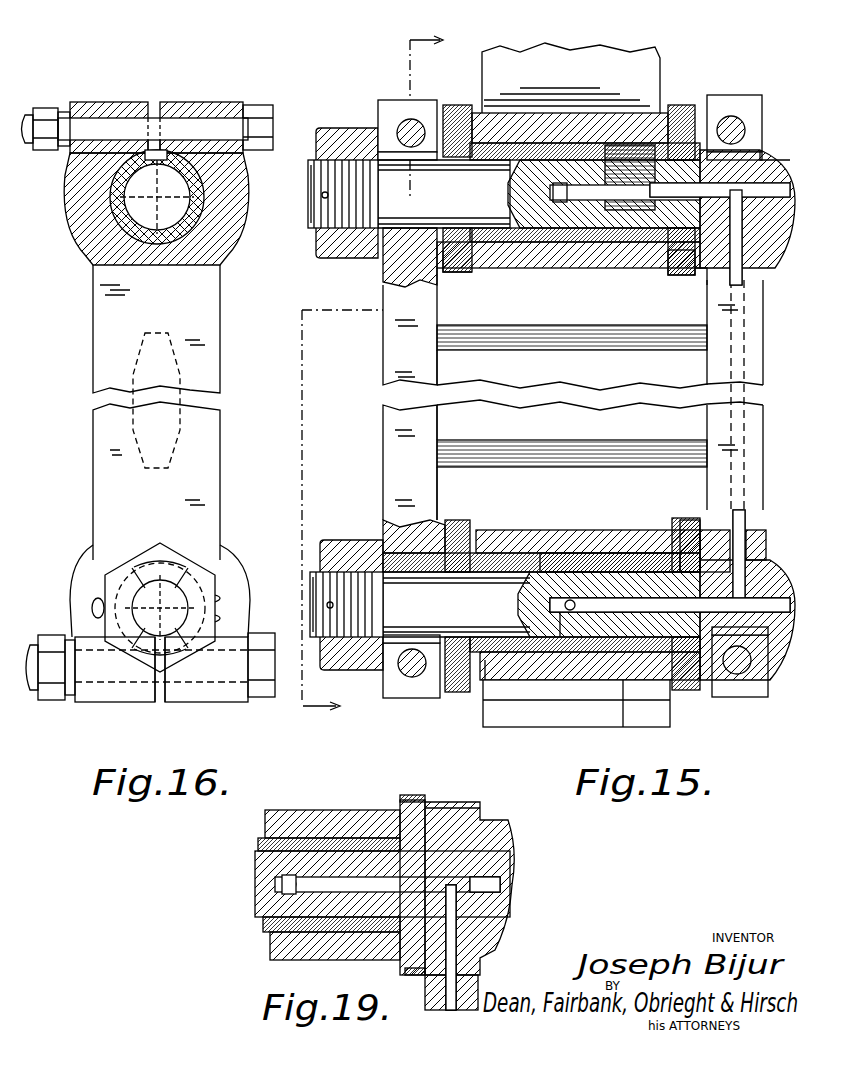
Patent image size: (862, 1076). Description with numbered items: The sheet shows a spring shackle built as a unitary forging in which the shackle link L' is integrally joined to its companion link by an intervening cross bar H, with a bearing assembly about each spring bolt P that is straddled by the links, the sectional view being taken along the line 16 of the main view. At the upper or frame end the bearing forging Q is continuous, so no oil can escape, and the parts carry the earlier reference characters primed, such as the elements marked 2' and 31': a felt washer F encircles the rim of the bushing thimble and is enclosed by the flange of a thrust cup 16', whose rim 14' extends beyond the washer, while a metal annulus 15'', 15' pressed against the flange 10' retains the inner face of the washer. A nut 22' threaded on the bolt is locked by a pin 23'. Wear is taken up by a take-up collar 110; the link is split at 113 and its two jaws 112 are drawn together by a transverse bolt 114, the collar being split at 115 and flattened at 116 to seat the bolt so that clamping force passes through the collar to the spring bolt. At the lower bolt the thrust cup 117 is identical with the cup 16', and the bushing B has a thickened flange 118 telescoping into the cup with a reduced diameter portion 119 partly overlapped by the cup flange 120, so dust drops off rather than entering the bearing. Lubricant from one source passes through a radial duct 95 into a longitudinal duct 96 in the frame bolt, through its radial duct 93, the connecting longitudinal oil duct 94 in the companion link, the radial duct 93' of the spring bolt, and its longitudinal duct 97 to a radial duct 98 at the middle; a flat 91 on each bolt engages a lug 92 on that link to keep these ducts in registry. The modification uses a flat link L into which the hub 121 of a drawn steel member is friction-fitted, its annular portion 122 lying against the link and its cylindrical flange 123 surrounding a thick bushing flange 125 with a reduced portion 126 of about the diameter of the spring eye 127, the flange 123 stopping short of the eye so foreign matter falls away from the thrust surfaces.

In FIG. 16, the jaws 112 is at (126, 101).
In FIG. 15, the jaws 112 is at (378, 110).
In FIG. 16, the split 113 is at (152, 105).
In FIG. 15, the split 113 is at (425, 105).
In FIG. 16, the bolt 114 is at (92, 128).
In FIG. 15, the bolt 114 is at (408, 125).
In FIG. 16, the flattened portion 116 is at (185, 150).
In FIG. 16, the longitudinal duct 96 is at (196, 197).
In FIG. 15, the longitudinal duct 96 is at (644, 268).
In FIG. 16, the spring bolt P is at (92, 215).
In FIG. 15, the spring bolt P is at (520, 268).
In FIG. 16, the shackle link L' is at (137, 412).
In FIG. 15, the shackle link L' is at (378, 401).
In FIG. 16, the cross bar H is at (137, 366).
In FIG. 15, the cross bar H is at (600, 396).
In FIG. 15, the thrust cup 16 is at (371, 375).
In FIG. 15, the bearing forging Q is at (594, 112).
In FIG. 15, the nut 22' is at (339, 183).
In FIG. 15, the cotter pin 23' is at (299, 216).
In FIG. 15, the take-up collar 110 is at (382, 270).
In FIG. 15, the split 115 is at (345, 733).
In FIG. 15, the felt washer F is at (690, 118).
In FIG. 15, the flange 10' is at (568, 165).
In FIG. 15, the metal annulus 15'' is at (585, 111).
In FIG. 15, the radial duct 95 is at (602, 268).
In FIG. 15, the radial duct 93 is at (726, 359).
In FIG. 15, the lug 92 is at (673, 415).
In FIG. 15, the flat 91 is at (770, 250).
In FIG. 15, the metal annulus 15' is at (673, 282).
In FIG. 15, the rim 14' is at (692, 299).
In FIG. 15, the flange lip 2' is at (466, 278).
In FIG. 15, the wall 31' is at (454, 296).
In FIG. 15, the thrust cup 16' is at (571, 439).
In FIG. 15, the bearing bushing B is at (512, 545).
In FIG. 19, the bearing bushing B is at (345, 838).
In FIG. 15, the thickened flange 118 is at (665, 552).
In FIG. 15, the reduced diameter portion 119 is at (680, 522).
In FIG. 15, the longitudinal oil duct 94 is at (706, 528).
In FIG. 15, the thrust cup 117 is at (760, 532).
In FIG. 15, the cup flange 120 is at (690, 690).
In FIG. 15, the radial duct 98 is at (552, 660).
In FIG. 15, the longitudinal duct 97 is at (620, 612).
In FIG. 15, the radial duct 93' is at (670, 676).
In FIG. 19, the spring eye 127 is at (302, 822).
In FIG. 19, the flange 125 is at (398, 800).
In FIG. 19, the reduced diameter portion 126 is at (418, 803).
In FIG. 19, the cylindrical flange 123 is at (458, 804).
In FIG. 19, the annular portion 122 is at (495, 820).
In FIG. 19, the hub 121 is at (508, 855).
In FIG. 19, the link L is at (469, 947).